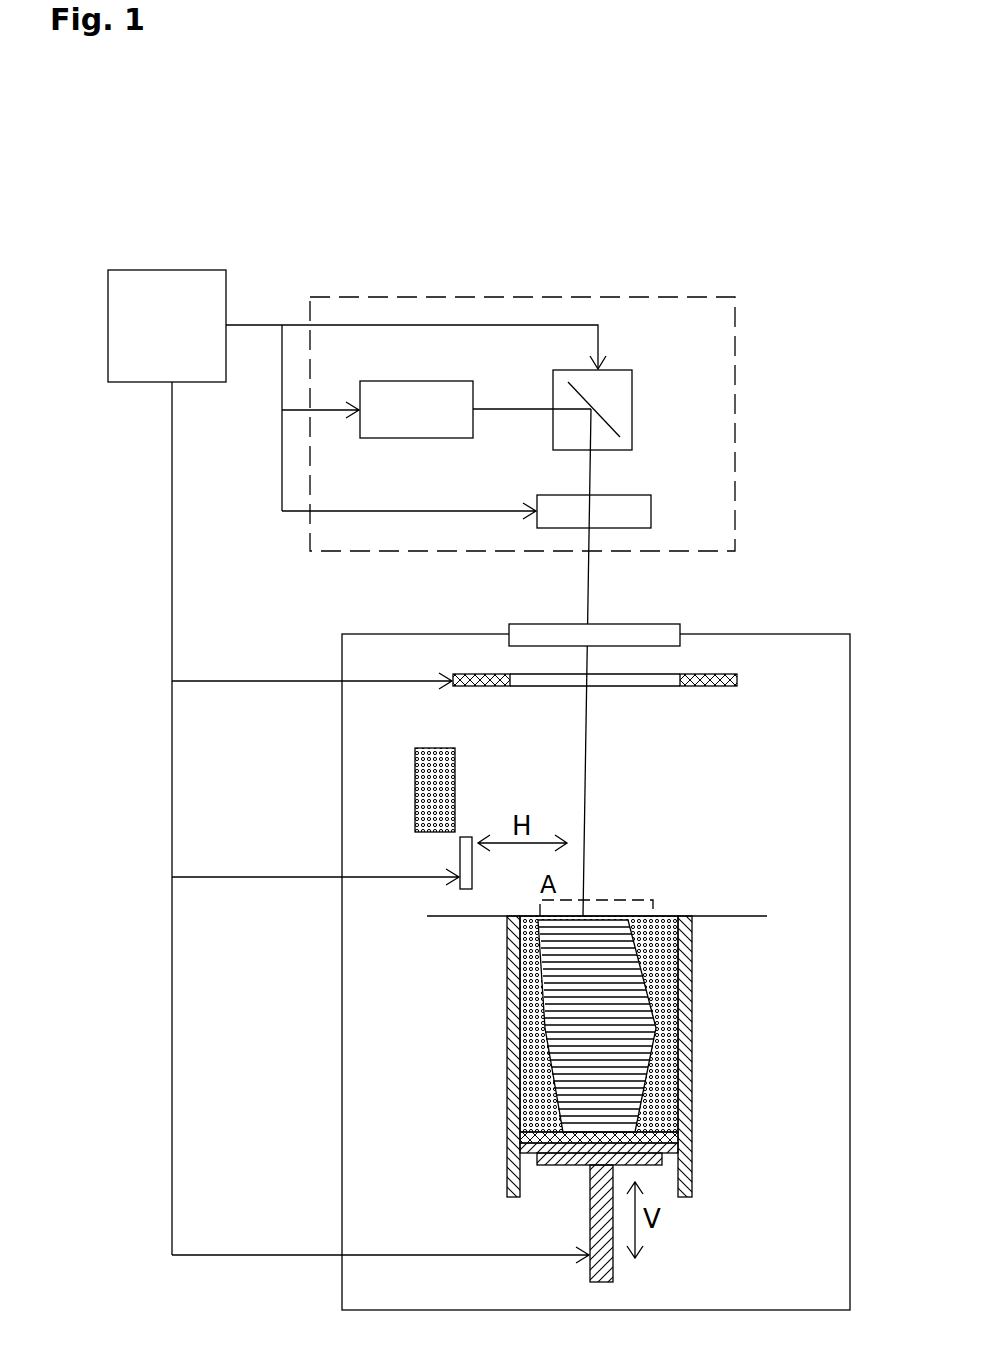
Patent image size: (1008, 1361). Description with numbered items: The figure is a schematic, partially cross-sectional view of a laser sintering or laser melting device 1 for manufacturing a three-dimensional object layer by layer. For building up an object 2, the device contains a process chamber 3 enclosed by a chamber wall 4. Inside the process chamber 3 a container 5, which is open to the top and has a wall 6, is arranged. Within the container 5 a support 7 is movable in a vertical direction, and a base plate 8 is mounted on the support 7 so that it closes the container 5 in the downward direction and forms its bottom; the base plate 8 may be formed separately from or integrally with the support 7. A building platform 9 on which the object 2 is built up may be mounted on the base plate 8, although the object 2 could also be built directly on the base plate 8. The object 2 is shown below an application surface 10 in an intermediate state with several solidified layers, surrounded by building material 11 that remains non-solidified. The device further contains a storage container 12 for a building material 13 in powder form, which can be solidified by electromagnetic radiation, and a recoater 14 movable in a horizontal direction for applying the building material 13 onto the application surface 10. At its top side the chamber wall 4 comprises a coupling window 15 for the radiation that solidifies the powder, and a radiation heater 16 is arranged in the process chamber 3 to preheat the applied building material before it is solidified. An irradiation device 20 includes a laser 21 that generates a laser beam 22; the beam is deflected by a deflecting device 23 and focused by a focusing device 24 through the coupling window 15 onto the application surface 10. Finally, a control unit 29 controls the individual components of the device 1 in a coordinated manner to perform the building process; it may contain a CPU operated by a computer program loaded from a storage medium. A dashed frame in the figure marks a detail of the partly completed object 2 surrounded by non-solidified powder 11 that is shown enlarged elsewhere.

The laser sintering or laser melting device 1 is at (843, 242).
The object 2 is at (615, 971).
The process chamber 3 is at (453, 663).
The chamber wall 4 is at (387, 633).
The container 5 is at (639, 1056).
The wall 6 is at (683, 1058).
The support 7 is at (582, 1155).
The base plate 8 is at (550, 1155).
The building platform 9 is at (550, 1138).
The application surface 10 is at (664, 915).
The building material remaining non-solidified 11 is at (507, 958).
The storage container 12 is at (432, 748).
The building material 13 is at (447, 792).
The recoater 14 is at (462, 857).
The coupling window 15 is at (628, 635).
The radiation heater 16 is at (703, 688).
The irradiation device 20 is at (735, 410).
The laser 21 is at (417, 433).
The laser beam 22 is at (494, 408).
The deflecting device 23 is at (620, 381).
The focusing device 24 is at (622, 507).
The control unit 29 is at (167, 326).